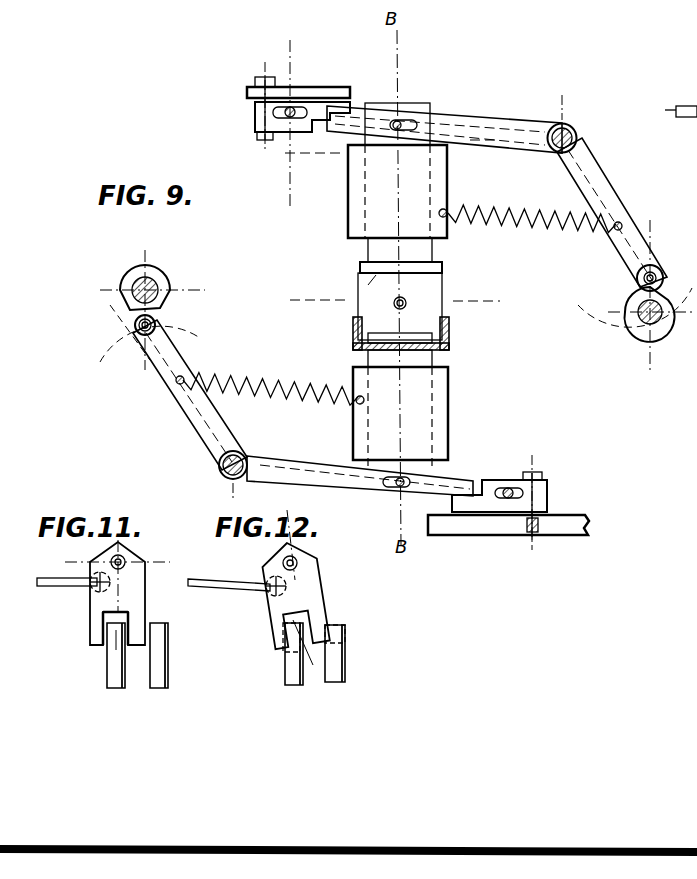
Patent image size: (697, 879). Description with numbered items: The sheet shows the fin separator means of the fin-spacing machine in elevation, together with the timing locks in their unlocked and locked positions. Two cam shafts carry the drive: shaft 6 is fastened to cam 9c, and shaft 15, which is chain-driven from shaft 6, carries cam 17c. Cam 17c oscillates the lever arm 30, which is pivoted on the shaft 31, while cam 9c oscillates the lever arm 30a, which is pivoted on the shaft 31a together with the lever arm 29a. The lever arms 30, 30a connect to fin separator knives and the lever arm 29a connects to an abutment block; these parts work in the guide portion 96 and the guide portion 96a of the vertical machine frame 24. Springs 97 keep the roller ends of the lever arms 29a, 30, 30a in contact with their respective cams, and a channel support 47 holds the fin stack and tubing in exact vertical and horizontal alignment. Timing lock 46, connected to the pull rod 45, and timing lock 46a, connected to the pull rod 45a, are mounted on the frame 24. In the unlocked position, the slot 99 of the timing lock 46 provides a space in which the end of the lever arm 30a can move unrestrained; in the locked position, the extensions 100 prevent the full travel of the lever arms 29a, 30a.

In FIG. 9, the machine frame 24 is at (302, 87).
In FIG. 9, the timing lock 46 is at (256, 120).
In FIG. 11, the timing lock 46 is at (88, 607).
In FIG. 12, the timing lock 46 is at (315, 583).
In FIG. 9, the pull rod 45 is at (291, 120).
In FIG. 11, the pull rod 45 is at (62, 580).
In FIG. 12, the pull rod 45 is at (237, 574).
In FIG. 9, the shaft 31a is at (560, 152).
In FIG. 9, the guide portion 96a is at (448, 185).
In FIG. 9, the channel support 47 is at (353, 332).
In FIG. 9, the guide portion 96 is at (449, 427).
In FIG. 9, the spring 97 is at (520, 222).
In FIG. 9, the lever arm 30a is at (646, 279).
In FIG. 11, the lever arm 30a is at (113, 658).
In FIG. 12, the lever arm 30a is at (293, 670).
In FIG. 9, the cam 9c is at (647, 333).
In FIG. 9, the shaft 6 is at (637, 313).
In FIG. 9, the cam 17c is at (150, 276).
In FIG. 9, the shaft 15 is at (160, 290).
In FIG. 9, the lever arm 30 is at (172, 363).
In FIG. 9, the shaft 31 is at (243, 453).
In FIG. 9, the timing lock 46a is at (548, 494).
In FIG. 9, the pull rod 45a is at (506, 488).
In FIG. 11, the slot 99 is at (113, 618).
In FIG. 11, the extension 100 is at (100, 630).
In FIG. 12, the extension 100 is at (283, 642).
In FIG. 11, the lever arm 29a is at (157, 658).
In FIG. 12, the lever arm 29a is at (333, 667).